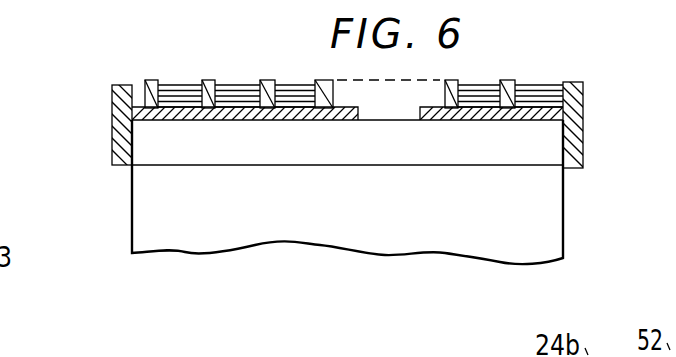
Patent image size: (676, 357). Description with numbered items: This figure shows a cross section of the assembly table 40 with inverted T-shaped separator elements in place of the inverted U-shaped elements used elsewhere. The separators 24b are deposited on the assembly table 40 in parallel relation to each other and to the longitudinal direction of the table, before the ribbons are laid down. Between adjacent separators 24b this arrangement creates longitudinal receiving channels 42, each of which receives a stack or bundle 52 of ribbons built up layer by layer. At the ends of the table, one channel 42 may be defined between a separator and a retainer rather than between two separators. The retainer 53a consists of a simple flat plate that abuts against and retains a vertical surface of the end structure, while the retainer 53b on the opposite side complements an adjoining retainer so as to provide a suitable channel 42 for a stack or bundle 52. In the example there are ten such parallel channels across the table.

The assembly table 40 is at (140, 206).
The retainer 53a is at (115, 123).
The retainer 53b is at (583, 120).
The stack or bundle 52 is at (375, 72).
The receiving channel 42 is at (273, 82).
The separator 24b is at (152, 85).